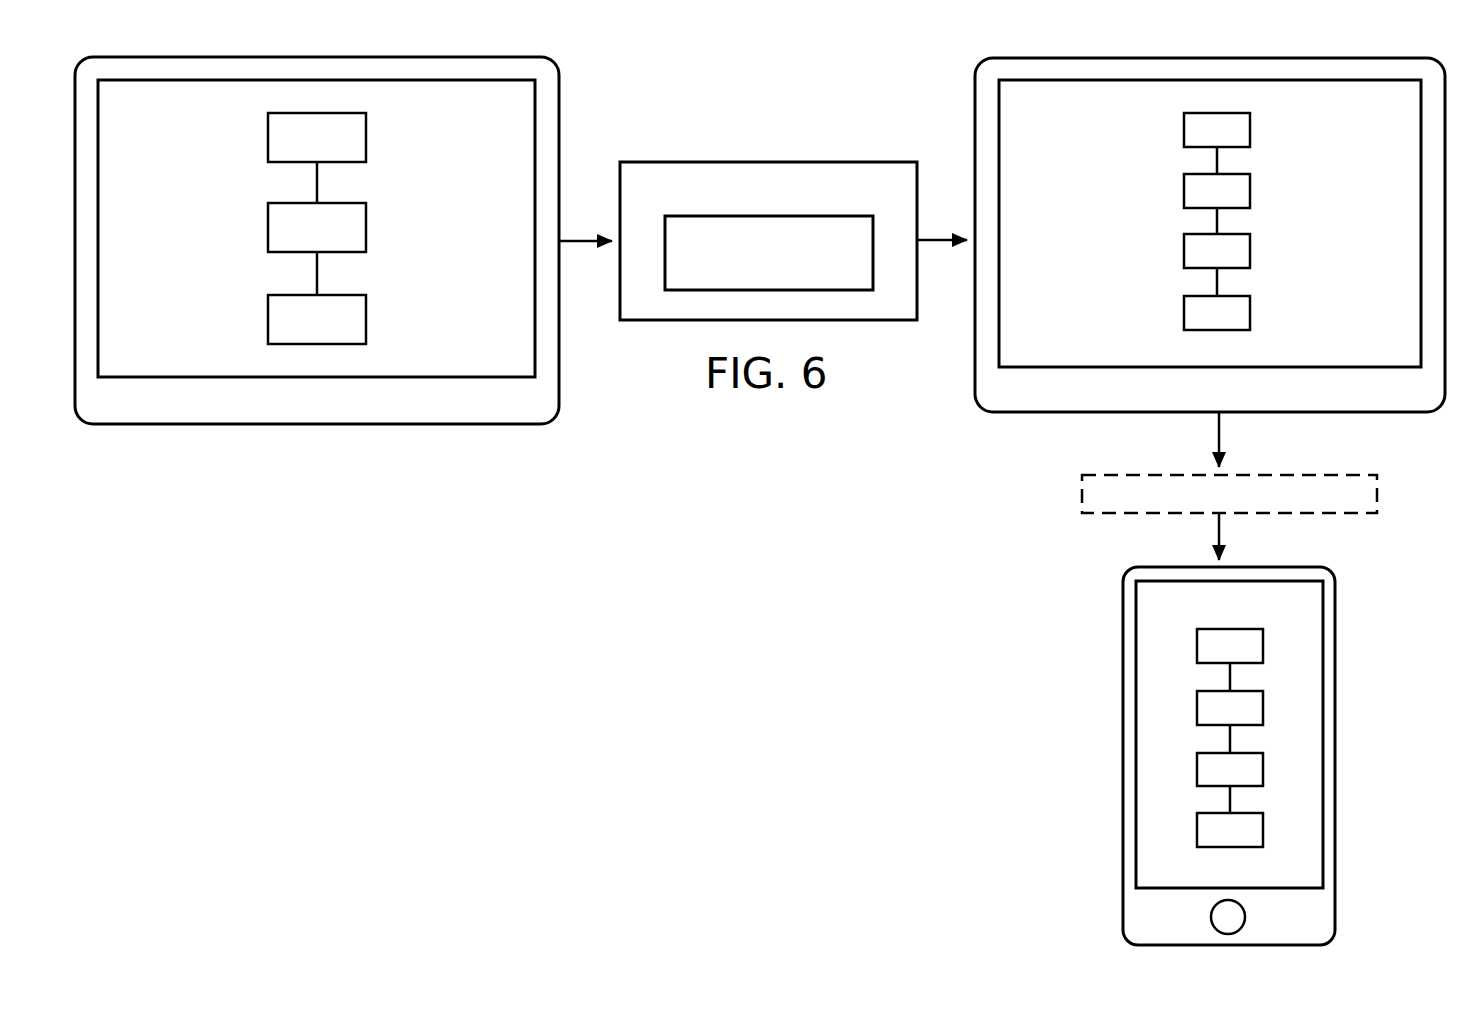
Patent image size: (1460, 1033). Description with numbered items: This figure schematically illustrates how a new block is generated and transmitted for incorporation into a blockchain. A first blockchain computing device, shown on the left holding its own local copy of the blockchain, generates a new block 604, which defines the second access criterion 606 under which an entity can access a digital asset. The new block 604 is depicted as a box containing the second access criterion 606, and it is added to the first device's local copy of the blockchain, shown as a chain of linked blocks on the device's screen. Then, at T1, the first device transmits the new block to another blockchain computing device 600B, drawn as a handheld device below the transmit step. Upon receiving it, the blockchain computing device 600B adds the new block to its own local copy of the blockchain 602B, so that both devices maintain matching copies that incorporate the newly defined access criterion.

The new block 604 is at (768, 241).
The second access criterion 606 is at (769, 253).
The transmission time T1 is at (1082, 497).
The blockchain computing device 600B is at (1189, 753).
The local copy of the blockchain 602B is at (1227, 620).